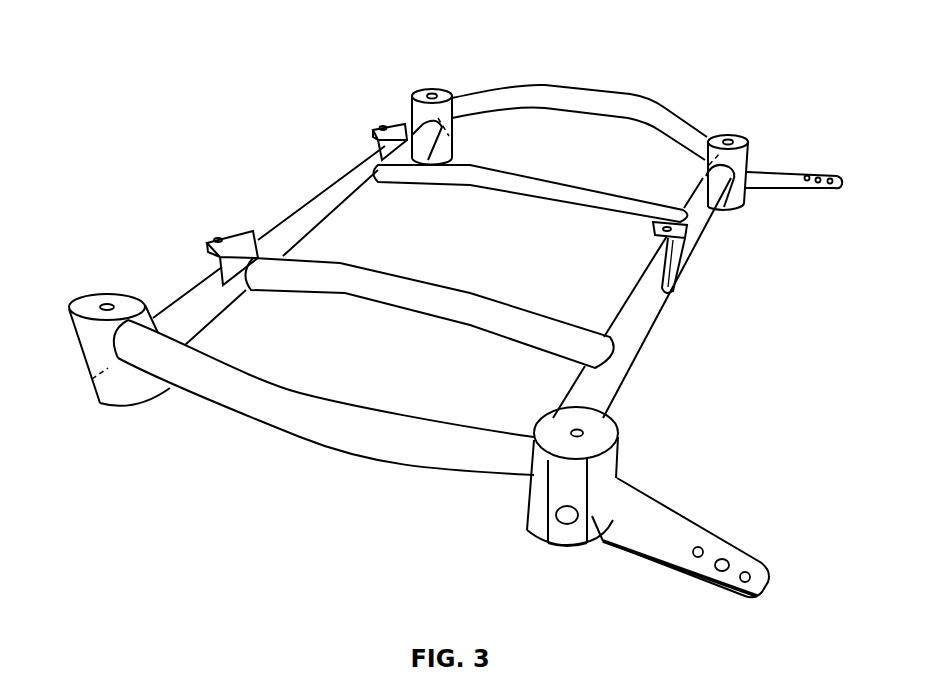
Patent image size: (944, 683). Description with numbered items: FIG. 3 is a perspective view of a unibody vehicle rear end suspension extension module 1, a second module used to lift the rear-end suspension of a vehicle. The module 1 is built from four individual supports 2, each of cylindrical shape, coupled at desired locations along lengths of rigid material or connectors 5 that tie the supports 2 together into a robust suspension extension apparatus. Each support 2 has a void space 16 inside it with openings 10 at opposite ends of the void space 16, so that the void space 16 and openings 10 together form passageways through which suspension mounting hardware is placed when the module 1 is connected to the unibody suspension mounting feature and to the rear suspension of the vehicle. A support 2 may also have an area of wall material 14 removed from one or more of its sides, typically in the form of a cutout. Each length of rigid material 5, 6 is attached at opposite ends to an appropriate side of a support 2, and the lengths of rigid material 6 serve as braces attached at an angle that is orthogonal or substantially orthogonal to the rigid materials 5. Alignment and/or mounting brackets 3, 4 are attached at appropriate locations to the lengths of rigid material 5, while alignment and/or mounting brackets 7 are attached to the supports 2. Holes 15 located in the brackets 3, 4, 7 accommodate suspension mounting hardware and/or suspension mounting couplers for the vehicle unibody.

The module 1 is at (291, 163).
The support 2 is at (426, 90).
The alignment and/or mounting bracket 3 is at (397, 126).
The alignment and/or mounting bracket 4 is at (686, 230).
The rigid material/connector 5 is at (637, 328).
The rigid material brace 6 is at (597, 106).
The alignment and/or mounting bracket 7 is at (800, 172).
The opening 10 is at (434, 94).
The area of wall material removed 14 is at (545, 535).
The hole 15 is at (381, 128).
The void space/opening 16 is at (453, 135).